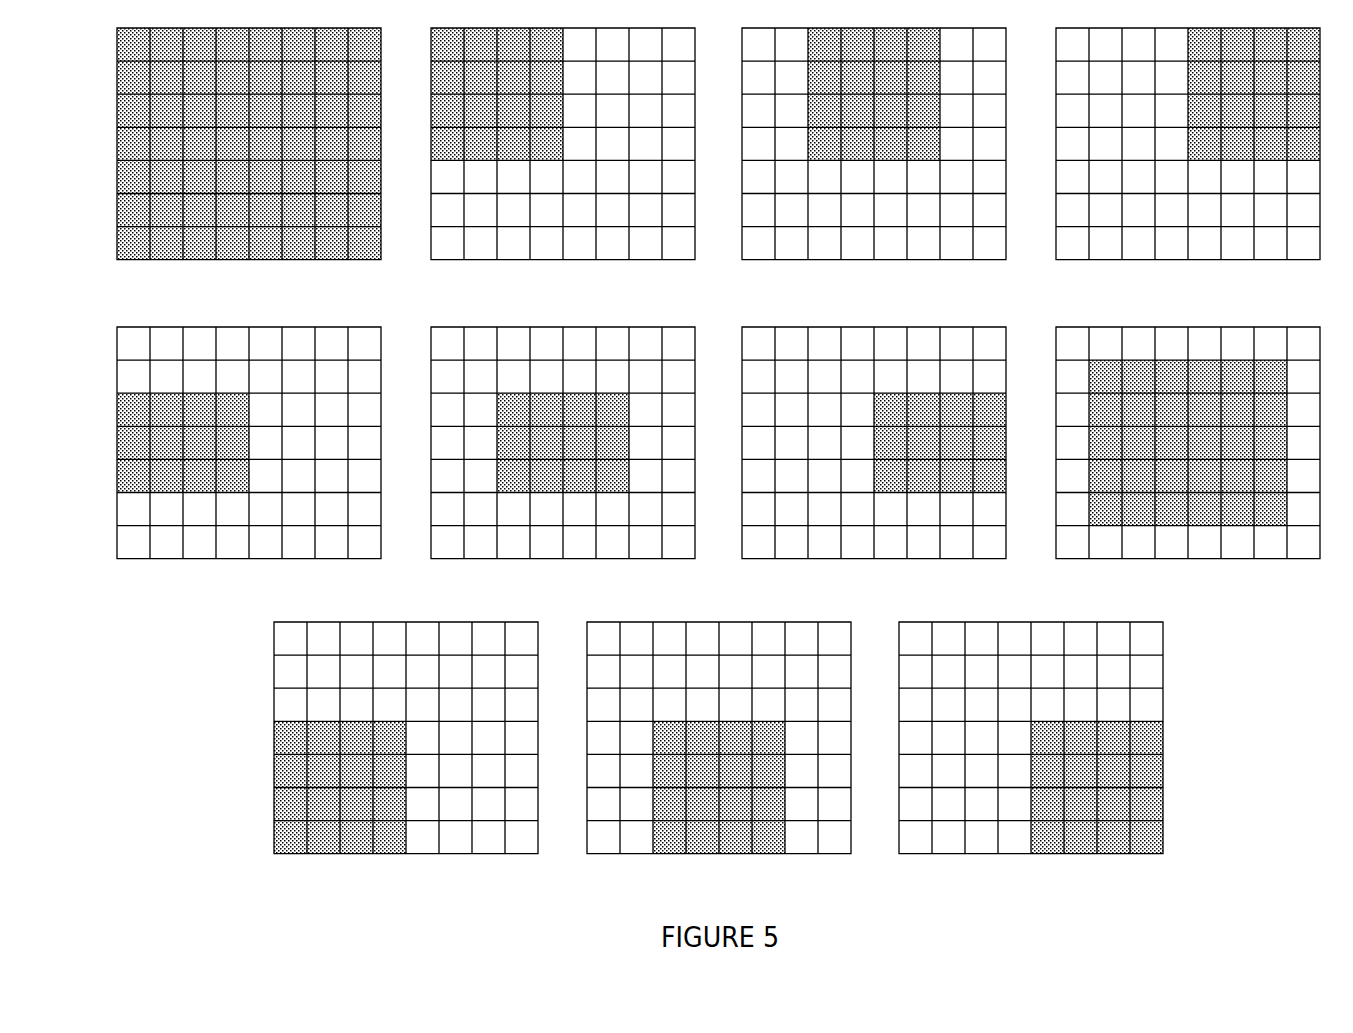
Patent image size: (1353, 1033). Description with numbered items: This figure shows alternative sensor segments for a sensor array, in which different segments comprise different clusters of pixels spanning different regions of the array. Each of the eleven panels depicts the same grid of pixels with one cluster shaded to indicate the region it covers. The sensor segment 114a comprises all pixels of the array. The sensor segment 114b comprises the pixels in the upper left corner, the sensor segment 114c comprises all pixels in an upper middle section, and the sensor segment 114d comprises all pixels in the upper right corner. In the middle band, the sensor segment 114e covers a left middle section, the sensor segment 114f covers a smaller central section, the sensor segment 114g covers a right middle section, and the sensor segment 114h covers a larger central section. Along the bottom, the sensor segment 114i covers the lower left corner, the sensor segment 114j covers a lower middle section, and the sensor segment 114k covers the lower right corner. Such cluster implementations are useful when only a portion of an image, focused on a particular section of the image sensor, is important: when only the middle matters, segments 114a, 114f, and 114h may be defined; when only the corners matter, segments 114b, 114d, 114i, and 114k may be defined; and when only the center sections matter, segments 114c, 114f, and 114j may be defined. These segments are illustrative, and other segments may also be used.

The sensor segment 114a is at (249, 159).
The sensor segment 114b is at (563, 159).
The sensor segment 114c is at (874, 159).
The sensor segment 114d is at (1188, 159).
The sensor segment 114e is at (249, 458).
The sensor segment 114f is at (563, 458).
The sensor segment 114g is at (874, 458).
The sensor segment 114h is at (1188, 458).
The sensor segment 114i is at (406, 753).
The sensor segment 114j is at (719, 753).
The sensor segment 114k is at (1031, 753).